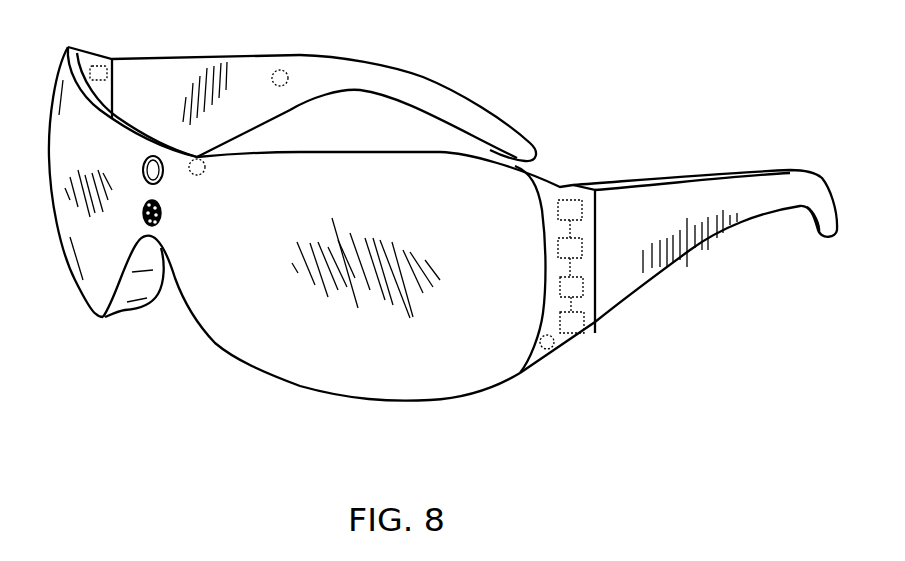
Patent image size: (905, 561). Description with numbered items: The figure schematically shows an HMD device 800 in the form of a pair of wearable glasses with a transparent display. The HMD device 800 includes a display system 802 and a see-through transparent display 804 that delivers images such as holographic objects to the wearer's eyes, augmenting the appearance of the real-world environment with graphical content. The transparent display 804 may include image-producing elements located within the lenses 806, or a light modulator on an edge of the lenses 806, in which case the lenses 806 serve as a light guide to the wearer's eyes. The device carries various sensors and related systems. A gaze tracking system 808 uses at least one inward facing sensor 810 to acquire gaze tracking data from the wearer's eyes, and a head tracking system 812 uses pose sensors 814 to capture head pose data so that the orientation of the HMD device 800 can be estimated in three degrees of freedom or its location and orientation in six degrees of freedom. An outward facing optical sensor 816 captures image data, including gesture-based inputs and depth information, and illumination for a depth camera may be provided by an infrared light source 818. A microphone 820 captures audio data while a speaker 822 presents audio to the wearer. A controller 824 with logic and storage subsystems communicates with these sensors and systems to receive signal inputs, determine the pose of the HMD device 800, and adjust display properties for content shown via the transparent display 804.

The HMD device 800 is at (477, 48).
The display system 802 is at (570, 200).
The transparent display 804 is at (247, 338).
The lenses 806 is at (133, 287).
The gaze tracking system 808 is at (582, 250).
The inward facing sensor 810 is at (197, 160).
The head tracking system 812 is at (583, 290).
The pose sensors 814 is at (583, 322).
The optical sensor 816 is at (162, 215).
The infrared light source 818 is at (168, 173).
The microphone 820 is at (550, 349).
The speaker 822 is at (283, 70).
The controller 824 is at (97, 66).